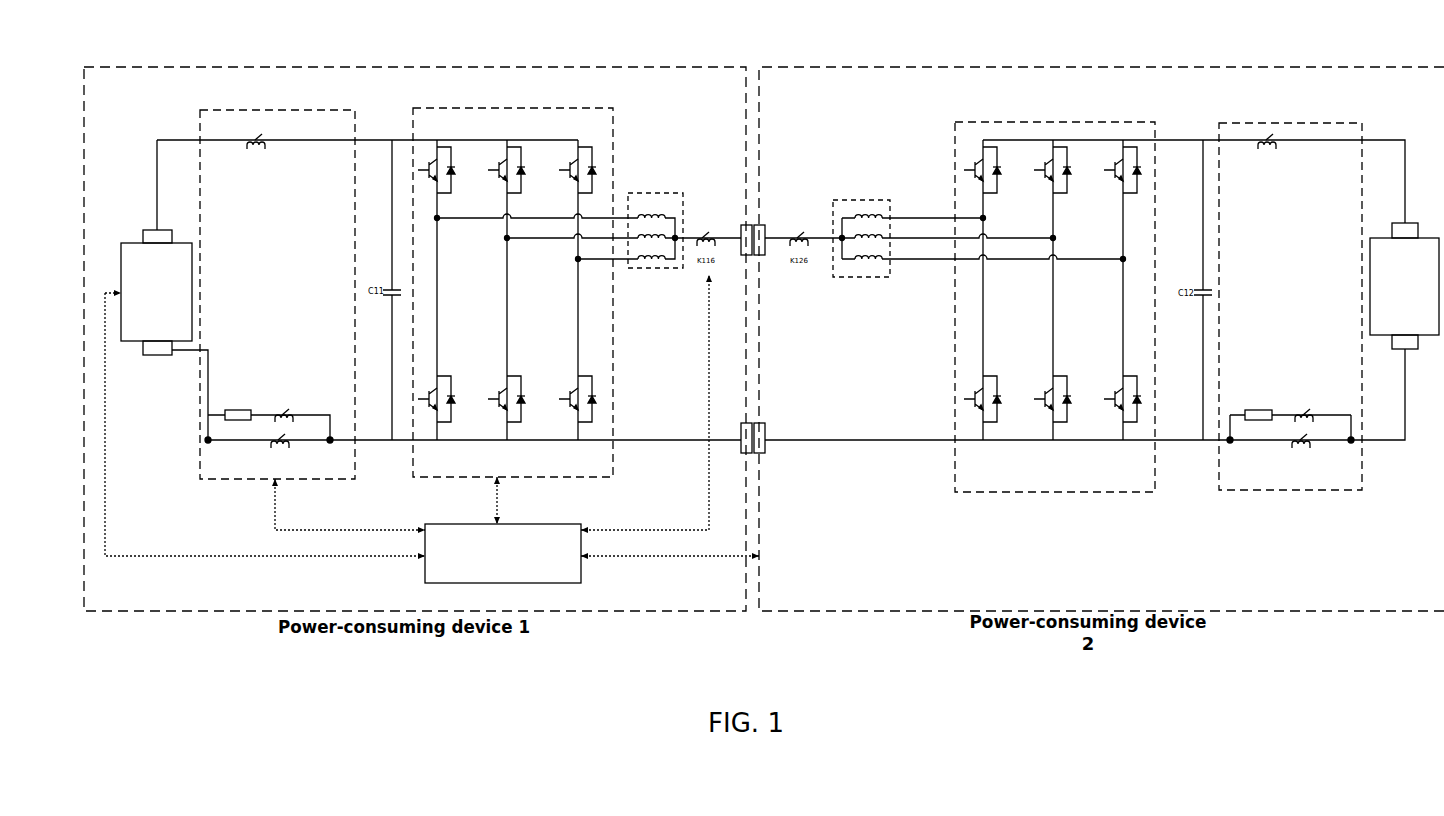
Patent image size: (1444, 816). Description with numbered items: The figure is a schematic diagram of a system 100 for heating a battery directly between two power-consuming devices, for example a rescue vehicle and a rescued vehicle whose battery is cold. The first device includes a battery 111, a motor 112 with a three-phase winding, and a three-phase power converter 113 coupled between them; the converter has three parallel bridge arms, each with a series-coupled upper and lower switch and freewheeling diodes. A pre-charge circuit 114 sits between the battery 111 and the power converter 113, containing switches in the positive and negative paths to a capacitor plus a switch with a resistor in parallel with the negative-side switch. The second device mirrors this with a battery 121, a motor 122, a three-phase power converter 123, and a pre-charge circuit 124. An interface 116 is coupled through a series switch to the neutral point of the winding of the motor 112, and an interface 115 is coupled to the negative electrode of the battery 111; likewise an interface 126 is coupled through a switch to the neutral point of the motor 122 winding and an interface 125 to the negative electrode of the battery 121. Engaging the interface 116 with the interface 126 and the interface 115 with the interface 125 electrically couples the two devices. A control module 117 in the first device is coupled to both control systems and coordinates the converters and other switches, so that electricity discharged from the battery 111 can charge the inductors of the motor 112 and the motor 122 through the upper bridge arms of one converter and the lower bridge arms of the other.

The system for heating a battery 100 is at (741, 642).
The battery 111 is at (156, 292).
The motor 112 is at (655, 219).
The three-phase power converter 113 is at (513, 281).
The pre-charge circuit 114 is at (277, 282).
The interface 115 is at (728, 437).
The interface 116 is at (728, 233).
The control module 117 is at (503, 553).
The battery 121 is at (1404, 286).
The motor 122 is at (861, 228).
The three-phase power converter 123 is at (1056, 297).
The pre-charge circuit 124 is at (1290, 294).
The interface 125 is at (775, 437).
The interface 126 is at (781, 233).